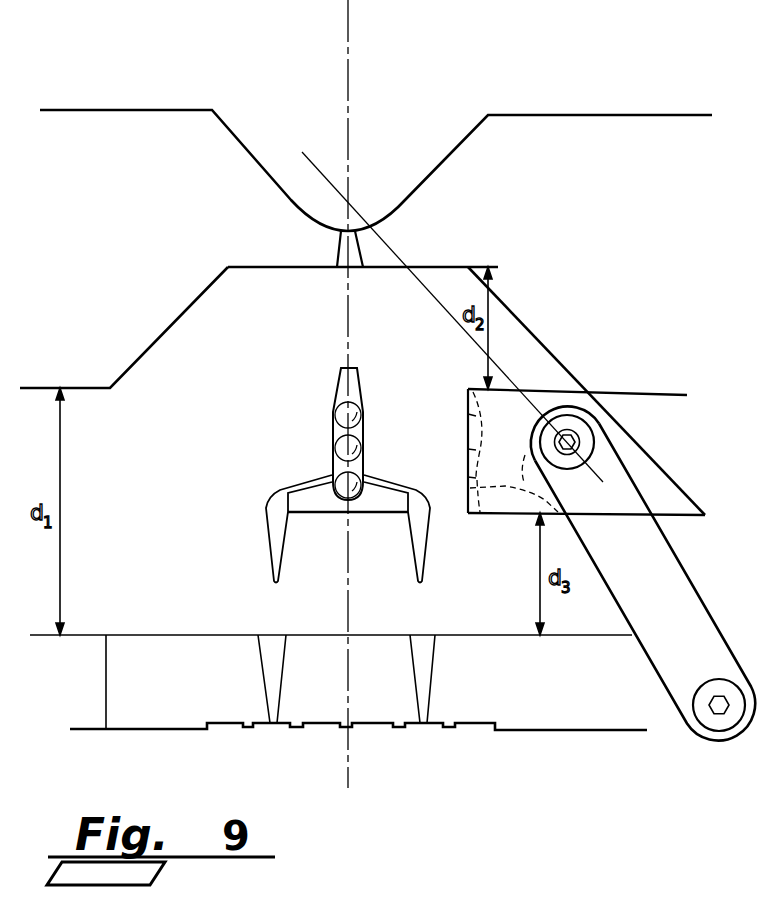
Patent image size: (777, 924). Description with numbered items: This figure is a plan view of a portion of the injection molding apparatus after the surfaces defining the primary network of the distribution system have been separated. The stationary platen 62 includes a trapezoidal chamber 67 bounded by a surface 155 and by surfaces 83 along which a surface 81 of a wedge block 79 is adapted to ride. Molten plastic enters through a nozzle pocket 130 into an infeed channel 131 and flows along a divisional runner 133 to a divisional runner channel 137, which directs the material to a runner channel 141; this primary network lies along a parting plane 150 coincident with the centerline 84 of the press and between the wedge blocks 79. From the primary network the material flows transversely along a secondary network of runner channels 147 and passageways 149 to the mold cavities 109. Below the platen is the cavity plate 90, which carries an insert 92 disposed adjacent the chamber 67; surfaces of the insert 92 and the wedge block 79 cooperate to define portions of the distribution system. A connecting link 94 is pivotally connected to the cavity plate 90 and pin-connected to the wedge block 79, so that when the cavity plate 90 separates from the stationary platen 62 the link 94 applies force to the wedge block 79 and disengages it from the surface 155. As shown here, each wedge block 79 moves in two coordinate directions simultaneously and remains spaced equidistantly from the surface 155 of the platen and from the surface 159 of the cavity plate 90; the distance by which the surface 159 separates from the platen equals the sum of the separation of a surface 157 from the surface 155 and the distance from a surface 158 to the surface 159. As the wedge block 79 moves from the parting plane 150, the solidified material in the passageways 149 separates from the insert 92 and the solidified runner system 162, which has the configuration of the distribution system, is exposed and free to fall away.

The centerline 84 is at (352, 24).
The nozzle pocket 130 is at (245, 147).
The stationary platen 62 is at (116, 221).
The infeed channel 131 is at (351, 258).
The surface 155 is at (272, 268).
The chamber 67 is at (180, 358).
The surface 81 is at (650, 451).
The surface 158 is at (681, 517).
The runner channel 147 is at (513, 451).
The divisional runner 133 is at (467, 416).
The divisional runner channel 137 is at (467, 450).
The runner channel 141 is at (467, 478).
The wedge block 79 is at (546, 396).
The surface 157 is at (540, 400).
The surface 83 is at (517, 331).
The connecting link 94 is at (662, 582).
The parting plane 150 is at (347, 352).
The runner system 162 is at (332, 522).
The surface 159 is at (96, 633).
The passageway 149 is at (432, 640).
The cavity plate 90 is at (83, 731).
The insert 92 is at (143, 713).
The mold cavity 109 is at (478, 729).